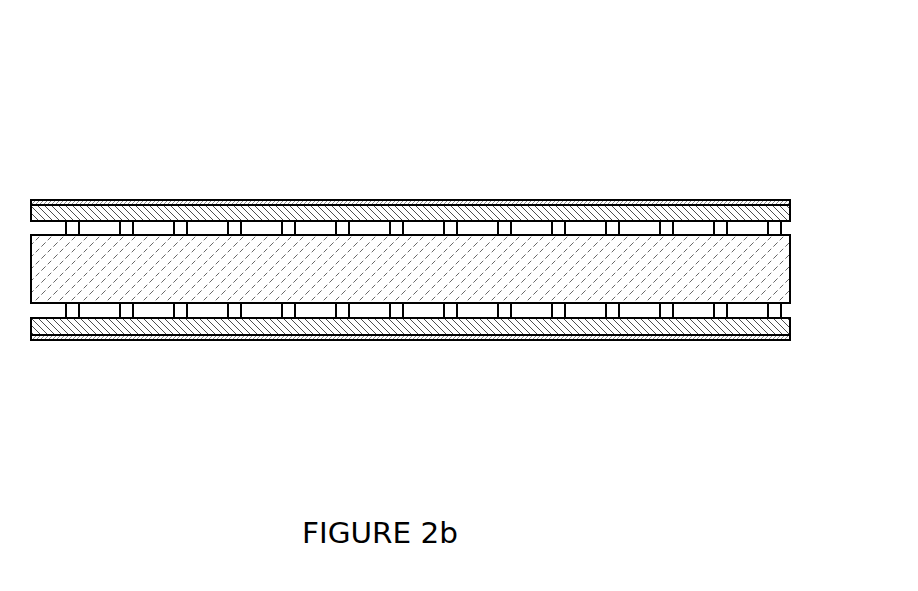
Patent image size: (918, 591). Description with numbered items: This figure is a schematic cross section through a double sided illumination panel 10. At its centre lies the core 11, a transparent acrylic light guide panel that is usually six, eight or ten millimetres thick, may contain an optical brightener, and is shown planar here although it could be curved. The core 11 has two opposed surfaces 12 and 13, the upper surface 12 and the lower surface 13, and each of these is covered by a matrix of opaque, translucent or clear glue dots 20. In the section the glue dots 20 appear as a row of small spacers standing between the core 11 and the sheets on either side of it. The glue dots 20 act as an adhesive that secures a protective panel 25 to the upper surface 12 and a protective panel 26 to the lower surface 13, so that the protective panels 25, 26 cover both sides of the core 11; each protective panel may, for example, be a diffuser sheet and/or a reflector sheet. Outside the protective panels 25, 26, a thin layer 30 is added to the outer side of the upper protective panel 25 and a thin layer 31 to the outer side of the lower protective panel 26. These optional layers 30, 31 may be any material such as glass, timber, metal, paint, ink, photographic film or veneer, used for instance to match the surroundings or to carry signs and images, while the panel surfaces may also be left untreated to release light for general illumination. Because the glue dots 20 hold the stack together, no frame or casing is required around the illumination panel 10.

The illumination panel 10 is at (535, 95).
The core 11 is at (623, 267).
The opposed surface 12 is at (525, 230).
The opposed surface 13 is at (412, 305).
The glue dots 20 is at (667, 230).
The protective panel 25 is at (362, 213).
The protective panel 26 is at (260, 325).
The layer 30 is at (217, 202).
The layer 31 is at (168, 340).